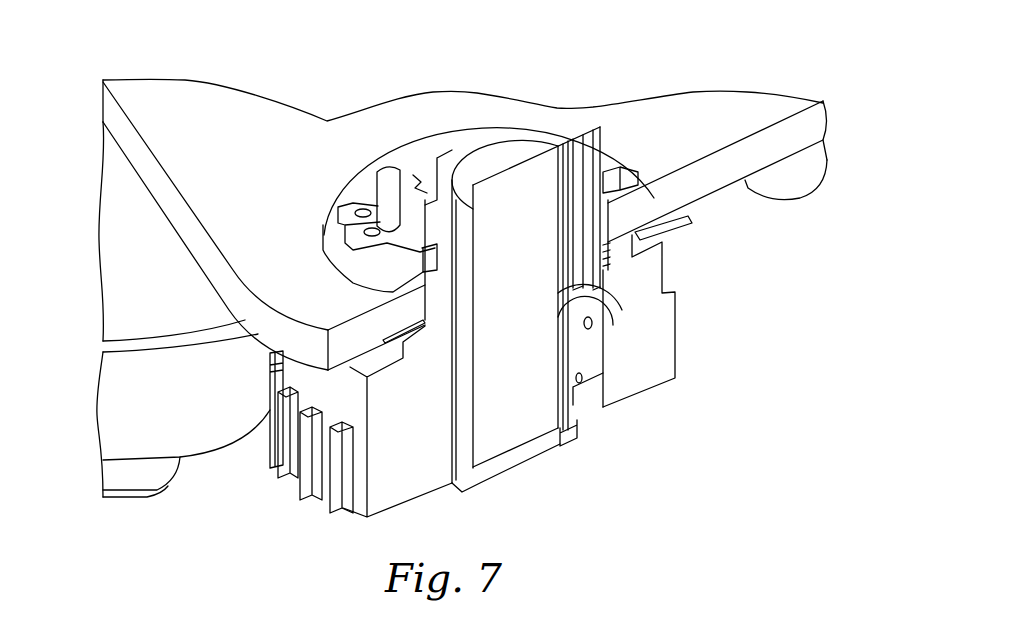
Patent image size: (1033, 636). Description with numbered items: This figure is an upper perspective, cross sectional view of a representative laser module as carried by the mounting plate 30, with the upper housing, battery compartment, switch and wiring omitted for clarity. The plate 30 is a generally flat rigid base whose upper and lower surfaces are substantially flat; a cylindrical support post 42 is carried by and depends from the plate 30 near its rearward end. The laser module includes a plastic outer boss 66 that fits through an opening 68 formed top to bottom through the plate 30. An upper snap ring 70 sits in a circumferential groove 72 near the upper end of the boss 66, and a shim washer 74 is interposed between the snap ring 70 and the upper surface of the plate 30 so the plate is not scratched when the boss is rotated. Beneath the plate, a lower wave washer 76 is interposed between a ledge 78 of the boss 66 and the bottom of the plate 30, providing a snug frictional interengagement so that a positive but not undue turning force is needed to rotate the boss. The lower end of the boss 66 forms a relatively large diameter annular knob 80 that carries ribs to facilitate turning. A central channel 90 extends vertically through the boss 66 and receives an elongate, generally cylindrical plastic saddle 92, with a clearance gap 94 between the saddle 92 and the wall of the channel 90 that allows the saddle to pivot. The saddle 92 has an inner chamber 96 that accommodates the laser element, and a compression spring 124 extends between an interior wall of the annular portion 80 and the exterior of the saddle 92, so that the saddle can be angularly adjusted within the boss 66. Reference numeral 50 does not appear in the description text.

The plate 30 is at (160, 192).
The cylindrical support post 42 is at (187, 462).
The support post 50 is at (505, 133).
The outer boss 66 is at (313, 480).
The opening 68 is at (658, 176).
The upper snap ring 70 is at (347, 208).
The circumferential groove 72 is at (400, 168).
The shim washer 74 is at (337, 265).
The lower wave washer 76 is at (690, 224).
The ledge 78 is at (638, 253).
The annular knob 80 is at (640, 393).
The central channel 90 is at (452, 150).
The saddle 92 is at (562, 440).
The clearance gap 94 is at (441, 163).
The inner chamber 96 is at (565, 282).
The compression spring 124 is at (580, 323).